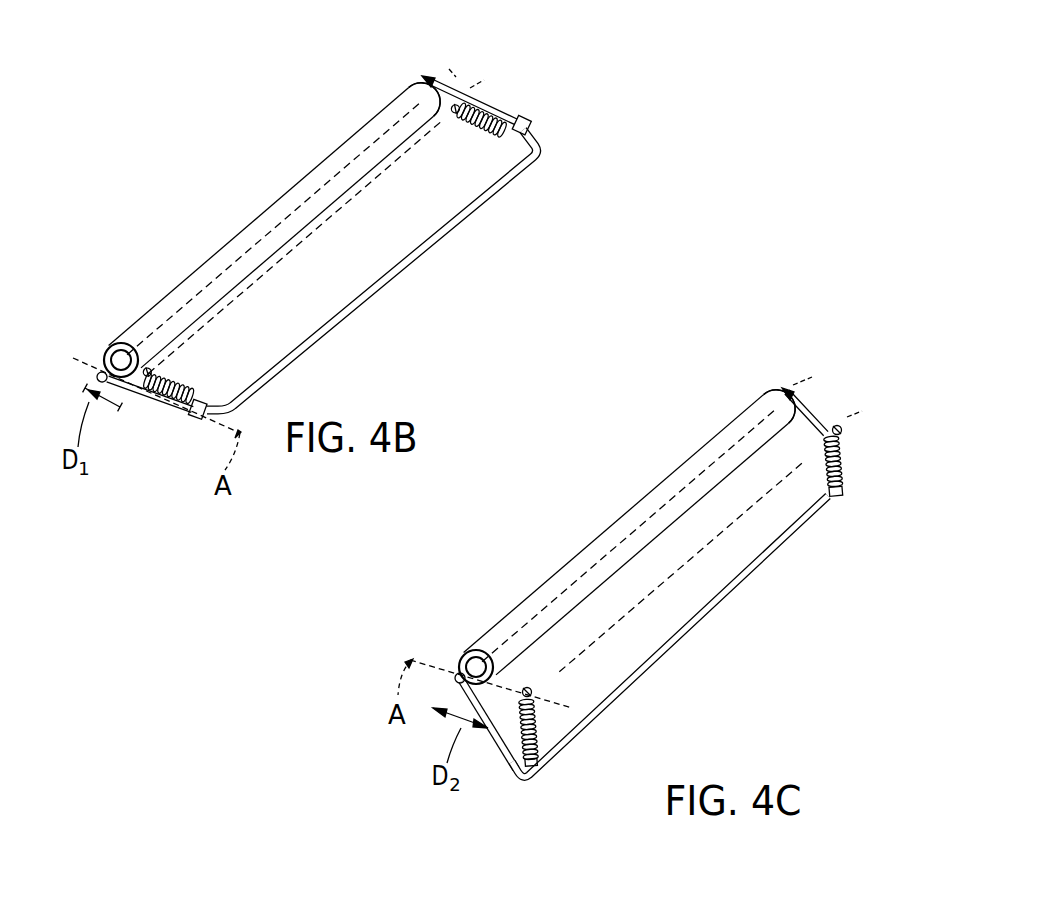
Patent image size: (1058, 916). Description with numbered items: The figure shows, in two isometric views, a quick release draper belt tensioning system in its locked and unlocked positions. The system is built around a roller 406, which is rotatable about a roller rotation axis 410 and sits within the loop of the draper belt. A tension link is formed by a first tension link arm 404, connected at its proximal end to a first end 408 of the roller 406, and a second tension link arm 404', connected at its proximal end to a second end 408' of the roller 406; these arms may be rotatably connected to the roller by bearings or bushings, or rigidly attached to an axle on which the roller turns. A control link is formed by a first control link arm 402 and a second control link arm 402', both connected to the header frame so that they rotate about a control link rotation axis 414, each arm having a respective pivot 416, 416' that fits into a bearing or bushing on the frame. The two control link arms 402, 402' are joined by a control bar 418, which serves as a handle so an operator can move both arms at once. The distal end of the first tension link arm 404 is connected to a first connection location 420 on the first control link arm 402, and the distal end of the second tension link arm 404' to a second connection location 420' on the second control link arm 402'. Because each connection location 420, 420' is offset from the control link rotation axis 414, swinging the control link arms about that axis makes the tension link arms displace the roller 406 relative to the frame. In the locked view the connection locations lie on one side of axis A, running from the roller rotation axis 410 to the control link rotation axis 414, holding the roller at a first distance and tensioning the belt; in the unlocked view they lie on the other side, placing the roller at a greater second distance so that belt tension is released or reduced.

In FIG. 4B, the first control link arm 402 is at (180, 301).
In FIG. 4C, the first control link arm 402 is at (576, 734).
In FIG. 4B, the second control link arm 402' is at (493, 173).
In FIG. 4C, the second control link arm 402' is at (883, 460).
In FIG. 4B, the first tension link arm 404 is at (156, 413).
In FIG. 4C, the first tension link arm 404 is at (489, 749).
In FIG. 4B, the second tension link arm 404' is at (491, 96).
In FIG. 4C, the second tension link arm 404' is at (823, 378).
In FIG. 4B, the roller 406 is at (262, 213).
In FIG. 4C, the roller 406 is at (620, 522).
In FIG. 4B, the first end of the roller 408 is at (116, 320).
In FIG. 4C, the first end of the roller 408 is at (468, 628).
In FIG. 4B, the second end of the roller 408' is at (410, 66).
In FIG. 4C, the second end of the roller 408' is at (765, 370).
In FIG. 4B, the roller rotation axis 410 is at (311, 190).
In FIG. 4C, the roller rotation axis 410 is at (585, 572).
In FIG. 4B, the control link rotation axis 414 is at (320, 224).
In FIG. 4C, the control link rotation axis 414 is at (663, 583).
In FIG. 4B, the pivot 416 is at (160, 298).
In FIG. 4C, the pivot 416 is at (509, 626).
In FIG. 4B, the pivot 416' is at (435, 147).
In FIG. 4C, the pivot 416' is at (843, 399).
In FIG. 4B, the control bar 418 is at (378, 289).
In FIG. 4C, the control bar 418 is at (642, 676).
In FIG. 4B, the first connection location 420 is at (188, 434).
In FIG. 4B, the second connection location 420' is at (552, 114).